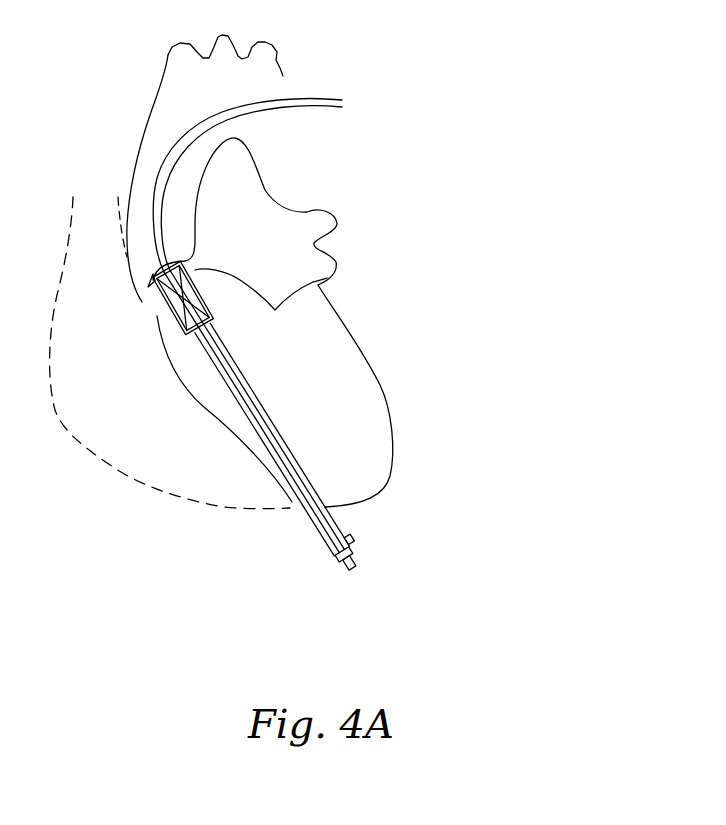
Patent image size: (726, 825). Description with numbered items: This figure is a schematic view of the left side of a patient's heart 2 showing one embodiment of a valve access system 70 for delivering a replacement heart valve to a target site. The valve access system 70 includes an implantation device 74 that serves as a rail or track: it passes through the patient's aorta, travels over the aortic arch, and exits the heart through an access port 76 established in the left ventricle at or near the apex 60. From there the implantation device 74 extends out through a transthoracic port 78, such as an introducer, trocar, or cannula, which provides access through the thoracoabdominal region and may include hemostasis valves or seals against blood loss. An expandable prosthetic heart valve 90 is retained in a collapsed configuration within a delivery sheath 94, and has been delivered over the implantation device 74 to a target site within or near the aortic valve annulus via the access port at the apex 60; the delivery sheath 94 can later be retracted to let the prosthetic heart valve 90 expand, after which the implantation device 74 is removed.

The heart 2 is at (407, 332).
The apex 60 is at (391, 489).
The valve access system 70 is at (349, 135).
The implantation device 74 is at (268, 106).
The access port 76 is at (333, 511).
The transthoracic port 78 is at (332, 550).
The expandable prosthetic heart valve 90 is at (152, 307).
The delivery sheath 94 is at (160, 330).